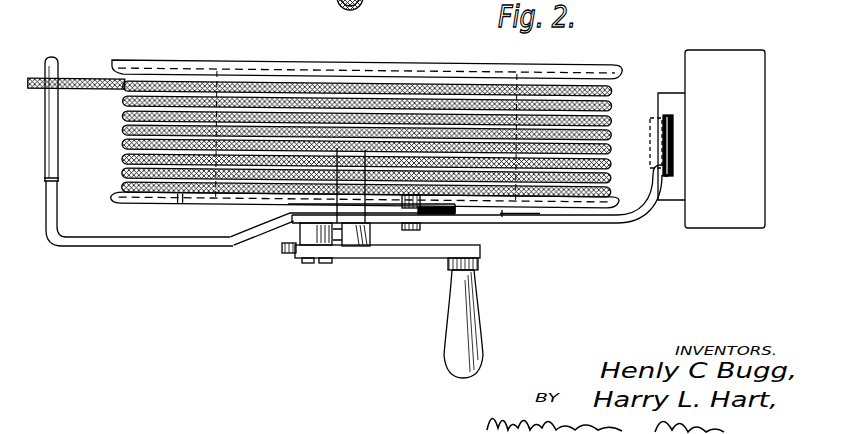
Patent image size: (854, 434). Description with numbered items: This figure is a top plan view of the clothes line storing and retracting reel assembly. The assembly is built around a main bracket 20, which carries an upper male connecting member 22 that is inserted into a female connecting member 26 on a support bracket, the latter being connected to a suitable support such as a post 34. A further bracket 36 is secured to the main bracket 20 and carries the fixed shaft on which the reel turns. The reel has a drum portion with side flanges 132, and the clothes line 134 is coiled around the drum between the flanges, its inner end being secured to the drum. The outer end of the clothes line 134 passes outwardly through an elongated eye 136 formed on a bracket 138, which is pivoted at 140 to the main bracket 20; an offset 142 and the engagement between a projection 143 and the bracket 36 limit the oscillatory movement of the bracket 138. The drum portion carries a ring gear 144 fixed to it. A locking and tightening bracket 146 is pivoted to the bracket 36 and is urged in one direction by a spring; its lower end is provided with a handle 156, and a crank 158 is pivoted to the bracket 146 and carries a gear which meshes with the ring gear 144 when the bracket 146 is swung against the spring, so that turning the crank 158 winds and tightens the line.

The main bracket 20 is at (603, 225).
The upper male connecting member 22 is at (656, 142).
The female connecting member 26 is at (668, 93).
The post 34 is at (763, 107).
The bracket 36 is at (533, 217).
The side flanges 132 is at (276, 60).
The clothes line 134 is at (88, 79).
The elongated eye 136 is at (50, 57).
The bracket 138 is at (161, 246).
The pivot 140 is at (415, 231).
The offset 142 is at (251, 236).
The projection 143 is at (455, 213).
The ring gear 144 is at (181, 199).
The locking and tightening bracket 146 is at (262, 207).
The handle 156 is at (356, 242).
The crank 158 is at (406, 258).